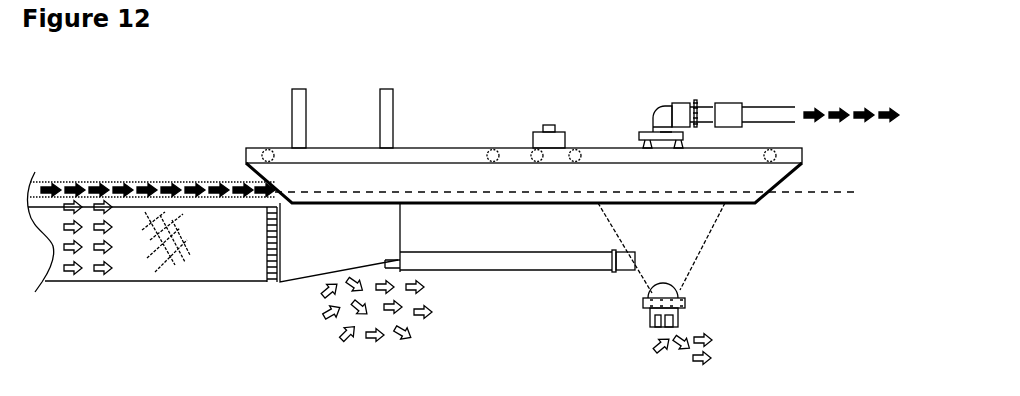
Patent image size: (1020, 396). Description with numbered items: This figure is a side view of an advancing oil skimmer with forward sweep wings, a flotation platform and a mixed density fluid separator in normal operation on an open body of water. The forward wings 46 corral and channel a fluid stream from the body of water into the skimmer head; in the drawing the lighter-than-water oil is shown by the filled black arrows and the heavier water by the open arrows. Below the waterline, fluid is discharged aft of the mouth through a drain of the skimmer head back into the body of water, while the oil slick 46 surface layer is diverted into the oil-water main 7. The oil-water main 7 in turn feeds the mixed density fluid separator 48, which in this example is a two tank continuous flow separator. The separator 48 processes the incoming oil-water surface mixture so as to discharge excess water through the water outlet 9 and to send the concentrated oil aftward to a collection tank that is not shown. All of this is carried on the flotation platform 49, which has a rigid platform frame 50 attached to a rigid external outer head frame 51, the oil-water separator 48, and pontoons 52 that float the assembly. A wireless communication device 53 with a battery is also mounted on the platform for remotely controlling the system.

The oil-water main 7 is at (510, 268).
The water outlet 9 is at (635, 317).
The forward wings 46 is at (100, 157).
The mixed density fluid separator 48 is at (660, 90).
The flotation platform 49 is at (497, 68).
The rigid platform frame 50 is at (460, 155).
The rigid external outer head frame 51 is at (373, 80).
The pontoons 52 is at (409, 182).
The wireless communication device 53 is at (549, 118).